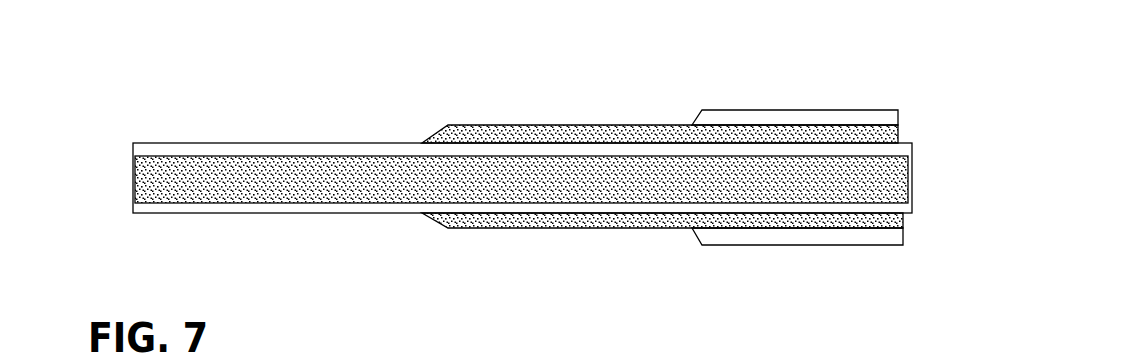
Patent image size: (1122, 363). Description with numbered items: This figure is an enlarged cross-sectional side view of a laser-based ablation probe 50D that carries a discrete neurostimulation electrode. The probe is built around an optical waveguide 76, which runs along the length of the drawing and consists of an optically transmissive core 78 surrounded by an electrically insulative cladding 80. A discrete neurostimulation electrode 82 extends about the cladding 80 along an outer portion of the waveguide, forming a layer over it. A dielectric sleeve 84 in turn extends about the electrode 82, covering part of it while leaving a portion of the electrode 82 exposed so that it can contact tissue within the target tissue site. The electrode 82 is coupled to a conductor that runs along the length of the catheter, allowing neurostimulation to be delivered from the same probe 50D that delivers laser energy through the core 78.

The laser-based ablation probe 50D is at (349, 58).
The optical waveguide 76 is at (186, 132).
The optically transmissive core 78 is at (132, 178).
The electrically insulative cladding 80 is at (268, 142).
The discrete neurostimulation electrode 82 is at (623, 132).
The dielectric sleeve 84 is at (767, 113).